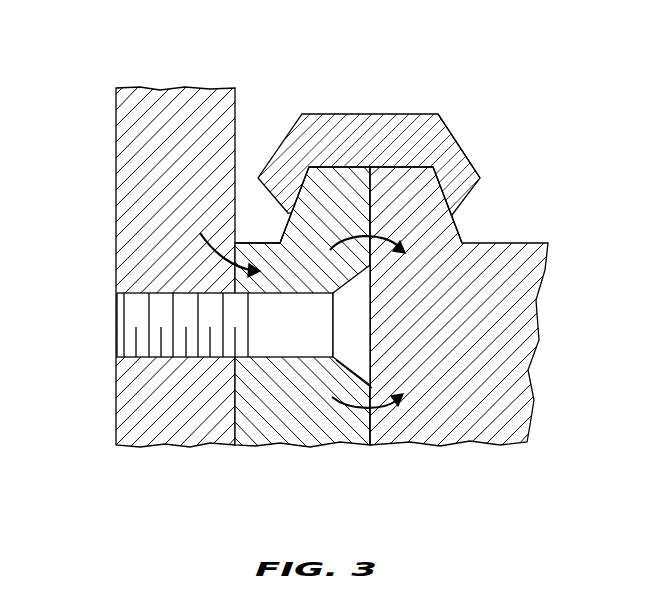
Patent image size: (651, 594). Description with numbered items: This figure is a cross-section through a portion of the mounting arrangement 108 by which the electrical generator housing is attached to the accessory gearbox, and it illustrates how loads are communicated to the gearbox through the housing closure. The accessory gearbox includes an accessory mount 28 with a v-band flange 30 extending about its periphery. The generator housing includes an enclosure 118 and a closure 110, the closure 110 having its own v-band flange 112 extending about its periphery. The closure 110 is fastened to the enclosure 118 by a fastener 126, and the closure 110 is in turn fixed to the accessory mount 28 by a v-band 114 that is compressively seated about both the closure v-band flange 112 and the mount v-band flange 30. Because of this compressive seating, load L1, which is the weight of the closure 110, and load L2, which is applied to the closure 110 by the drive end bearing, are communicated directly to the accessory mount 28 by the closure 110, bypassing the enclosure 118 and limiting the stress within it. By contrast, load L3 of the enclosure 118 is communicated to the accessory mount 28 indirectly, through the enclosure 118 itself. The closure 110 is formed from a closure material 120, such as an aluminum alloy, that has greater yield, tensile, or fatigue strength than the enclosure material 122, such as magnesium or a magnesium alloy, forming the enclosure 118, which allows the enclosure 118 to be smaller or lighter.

The accessory mount 28 is at (500, 273).
The v-band flange 30 is at (458, 148).
The mounting arrangement 108 is at (160, 462).
The closure 110 is at (295, 408).
The v-band flange 112 is at (291, 193).
The v-band 114 is at (382, 135).
The enclosure 118 is at (153, 172).
The closure material 120 is at (275, 260).
The enclosure material 122 is at (172, 147).
The fastener 126 is at (293, 332).
The load L1 is at (377, 412).
The load L2 is at (360, 233).
The load L3 is at (197, 272).